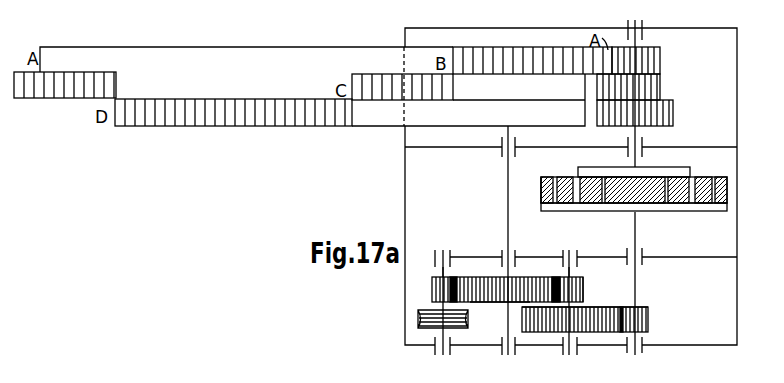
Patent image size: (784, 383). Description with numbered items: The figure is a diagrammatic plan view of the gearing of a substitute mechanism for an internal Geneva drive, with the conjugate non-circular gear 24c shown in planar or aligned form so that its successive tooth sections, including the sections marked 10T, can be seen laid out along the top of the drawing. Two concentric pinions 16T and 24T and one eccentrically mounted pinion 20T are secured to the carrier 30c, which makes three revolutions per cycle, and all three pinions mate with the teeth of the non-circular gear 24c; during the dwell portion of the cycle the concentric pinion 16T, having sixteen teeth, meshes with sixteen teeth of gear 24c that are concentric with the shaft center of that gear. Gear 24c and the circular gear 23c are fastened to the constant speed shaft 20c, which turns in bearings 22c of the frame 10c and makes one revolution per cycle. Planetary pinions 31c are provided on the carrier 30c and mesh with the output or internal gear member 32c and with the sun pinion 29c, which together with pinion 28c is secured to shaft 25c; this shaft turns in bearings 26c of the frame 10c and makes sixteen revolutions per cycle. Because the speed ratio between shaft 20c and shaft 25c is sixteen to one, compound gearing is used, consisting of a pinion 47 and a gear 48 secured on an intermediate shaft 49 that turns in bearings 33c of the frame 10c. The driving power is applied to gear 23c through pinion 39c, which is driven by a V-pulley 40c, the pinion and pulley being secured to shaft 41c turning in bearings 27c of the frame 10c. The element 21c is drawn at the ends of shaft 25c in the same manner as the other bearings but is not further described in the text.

The ten-tooth rack section 10T is at (67, 106).
The concentric pinion 24T is at (265, 131).
The concentric pinion 16T is at (548, 81).
The eccentrically mounted pinion 20T is at (660, 87).
The clutch 21c is at (643, 30).
The non-circular gear 24c is at (341, 53).
The frame 10c is at (405, 178).
The bearings 22c is at (500, 147).
The constant speed shaft 20c is at (508, 187).
The shaft 25c is at (635, 280).
The bearings 27c is at (437, 250).
The bearings 33c is at (578, 252).
The bearings 26c is at (644, 257).
The carrier 30c is at (683, 168).
The sun pinion 29c is at (621, 168).
The planetary pinions 31c is at (569, 177).
The internal gear member 32c is at (541, 192).
The pinion 39c is at (432, 291).
The shaft 41c is at (443, 277).
The intermediate shaft 49 is at (569, 277).
The pinion 47 is at (583, 290).
The gear 48 is at (585, 307).
The circular gear 23c is at (500, 298).
The V-pulley 40c is at (418, 320).
The pinion 28c is at (648, 318).